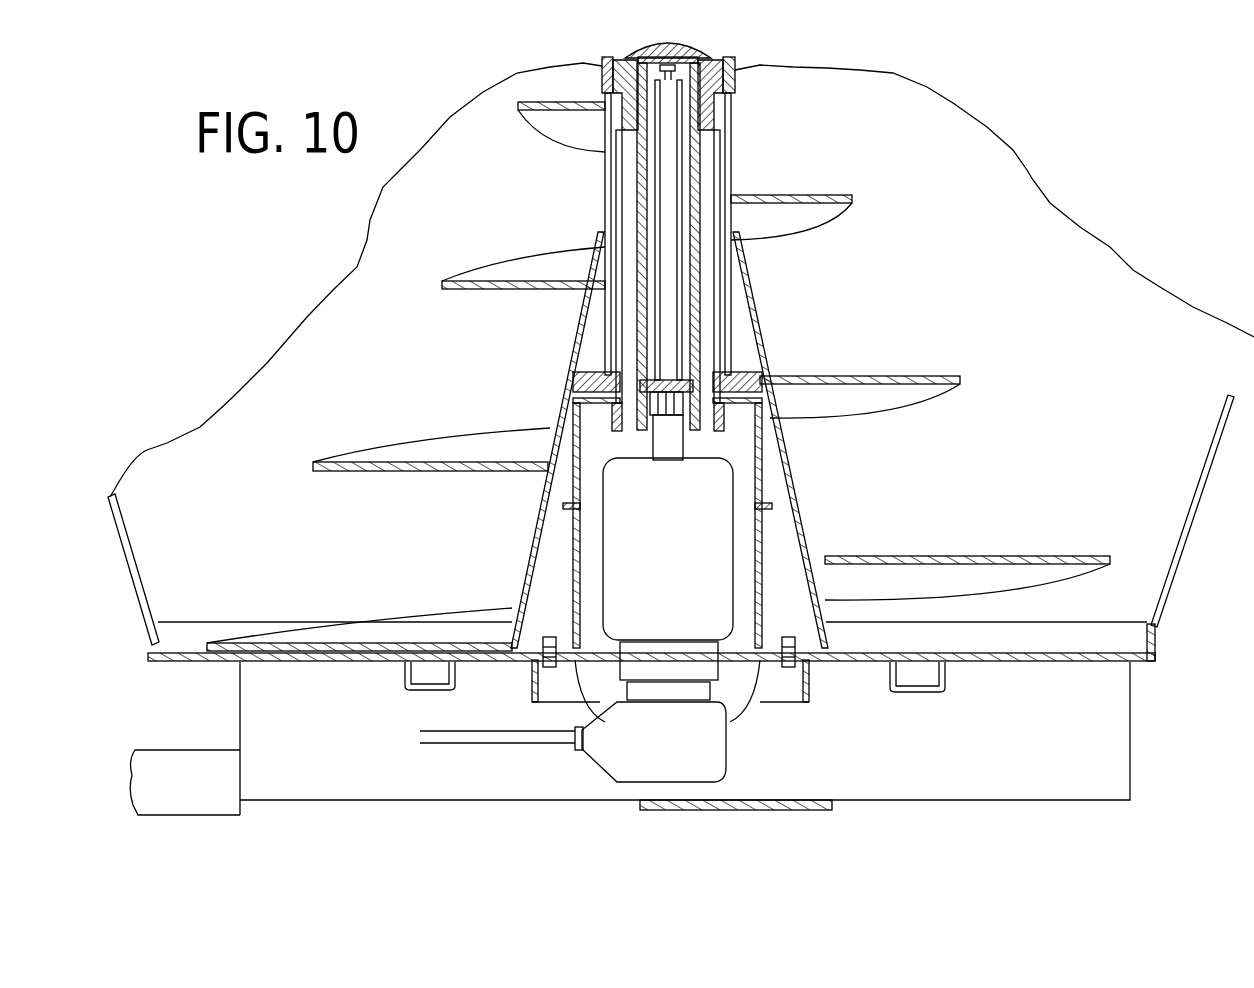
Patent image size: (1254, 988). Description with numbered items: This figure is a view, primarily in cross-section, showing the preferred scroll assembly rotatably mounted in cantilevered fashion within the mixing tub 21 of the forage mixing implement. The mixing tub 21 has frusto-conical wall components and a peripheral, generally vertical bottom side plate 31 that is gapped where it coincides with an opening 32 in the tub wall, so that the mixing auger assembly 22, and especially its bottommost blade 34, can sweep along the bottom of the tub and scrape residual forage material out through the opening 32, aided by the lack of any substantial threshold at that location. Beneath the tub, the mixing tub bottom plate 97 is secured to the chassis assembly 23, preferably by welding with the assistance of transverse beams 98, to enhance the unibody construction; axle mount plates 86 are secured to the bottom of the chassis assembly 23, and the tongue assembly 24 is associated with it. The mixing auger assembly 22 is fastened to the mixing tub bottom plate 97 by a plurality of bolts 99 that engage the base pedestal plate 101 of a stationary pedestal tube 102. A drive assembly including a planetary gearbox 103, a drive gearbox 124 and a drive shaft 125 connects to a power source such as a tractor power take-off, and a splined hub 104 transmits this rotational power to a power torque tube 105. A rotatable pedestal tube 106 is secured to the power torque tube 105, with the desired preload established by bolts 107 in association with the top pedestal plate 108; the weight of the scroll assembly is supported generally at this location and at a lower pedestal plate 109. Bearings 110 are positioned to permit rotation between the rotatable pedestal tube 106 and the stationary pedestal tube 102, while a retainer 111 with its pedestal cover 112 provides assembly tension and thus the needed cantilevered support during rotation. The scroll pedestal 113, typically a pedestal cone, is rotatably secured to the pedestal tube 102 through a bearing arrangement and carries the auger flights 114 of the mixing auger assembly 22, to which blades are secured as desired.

The mixing tub 21 is at (1142, 311).
The mixing auger assembly 22 is at (816, 192).
The chassis assembly 23 is at (1133, 762).
The tongue assembly 24 is at (190, 760).
The bottom side plate 31 is at (1158, 652).
The opening 32 is at (122, 548).
The bottommost blade 34 is at (237, 648).
The axle mount plate 86 is at (710, 807).
The mixing tub bottom plate 97 is at (1015, 664).
The transverse beams 98 is at (405, 672).
The bolts 99 is at (541, 668).
The base pedestal plate 101 is at (800, 662).
The pedestal tube 102 is at (760, 488).
The planetary gearbox 103 is at (652, 561).
The splined hub 104 is at (678, 422).
The power torque tube 105 is at (640, 333).
The rotatable pedestal tube 106 is at (732, 134).
The bolts 107 is at (611, 58).
The top pedestal plate 108 is at (708, 58).
The lower pedestal plate 109 is at (765, 380).
The bearings 110 is at (731, 63).
The retainer 111 is at (668, 170).
The pedestal cover 112 is at (682, 54).
The scroll pedestal 113 is at (752, 316).
The auger flights 114 is at (418, 450).
The drive gearbox 124 is at (682, 745).
The drive shaft 125 is at (478, 741).